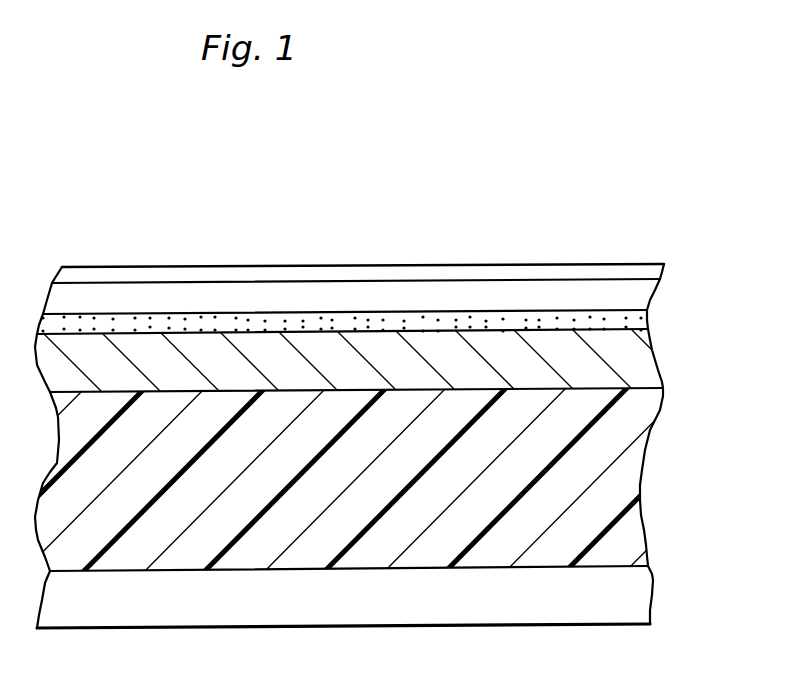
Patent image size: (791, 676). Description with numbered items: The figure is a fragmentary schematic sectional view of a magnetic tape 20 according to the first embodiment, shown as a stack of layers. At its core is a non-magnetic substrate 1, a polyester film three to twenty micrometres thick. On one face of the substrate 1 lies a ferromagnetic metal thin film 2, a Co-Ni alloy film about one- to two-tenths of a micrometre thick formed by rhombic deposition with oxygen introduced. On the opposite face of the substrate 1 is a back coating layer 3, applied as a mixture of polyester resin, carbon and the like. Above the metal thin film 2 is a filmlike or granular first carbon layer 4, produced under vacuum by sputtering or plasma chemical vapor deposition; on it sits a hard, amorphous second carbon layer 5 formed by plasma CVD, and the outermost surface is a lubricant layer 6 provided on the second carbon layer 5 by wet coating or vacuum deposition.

The magnetic tape 20 is at (331, 247).
The lubricant layer 6 is at (664, 264).
The second carbon layer 5 is at (643, 292).
The first carbon layer 4 is at (648, 320).
The ferromagnetic metal thin film 2 is at (657, 373).
The non-magnetic substrate 1 is at (630, 475).
The back coating layer 3 is at (638, 590).